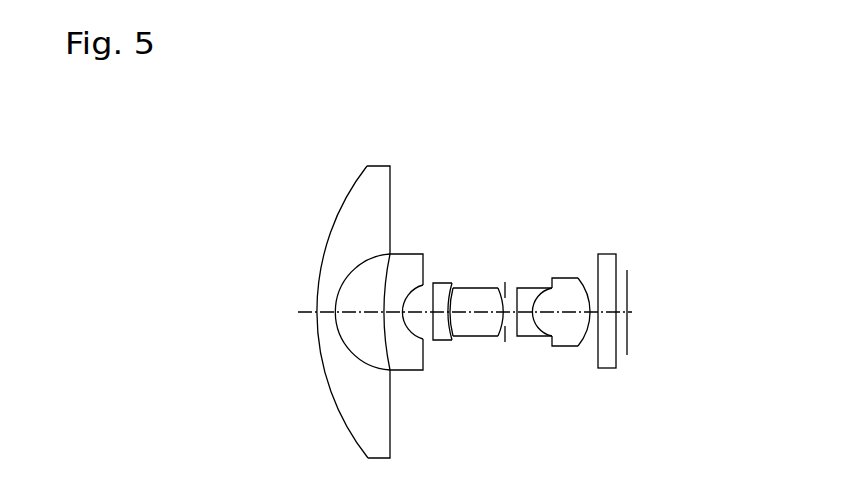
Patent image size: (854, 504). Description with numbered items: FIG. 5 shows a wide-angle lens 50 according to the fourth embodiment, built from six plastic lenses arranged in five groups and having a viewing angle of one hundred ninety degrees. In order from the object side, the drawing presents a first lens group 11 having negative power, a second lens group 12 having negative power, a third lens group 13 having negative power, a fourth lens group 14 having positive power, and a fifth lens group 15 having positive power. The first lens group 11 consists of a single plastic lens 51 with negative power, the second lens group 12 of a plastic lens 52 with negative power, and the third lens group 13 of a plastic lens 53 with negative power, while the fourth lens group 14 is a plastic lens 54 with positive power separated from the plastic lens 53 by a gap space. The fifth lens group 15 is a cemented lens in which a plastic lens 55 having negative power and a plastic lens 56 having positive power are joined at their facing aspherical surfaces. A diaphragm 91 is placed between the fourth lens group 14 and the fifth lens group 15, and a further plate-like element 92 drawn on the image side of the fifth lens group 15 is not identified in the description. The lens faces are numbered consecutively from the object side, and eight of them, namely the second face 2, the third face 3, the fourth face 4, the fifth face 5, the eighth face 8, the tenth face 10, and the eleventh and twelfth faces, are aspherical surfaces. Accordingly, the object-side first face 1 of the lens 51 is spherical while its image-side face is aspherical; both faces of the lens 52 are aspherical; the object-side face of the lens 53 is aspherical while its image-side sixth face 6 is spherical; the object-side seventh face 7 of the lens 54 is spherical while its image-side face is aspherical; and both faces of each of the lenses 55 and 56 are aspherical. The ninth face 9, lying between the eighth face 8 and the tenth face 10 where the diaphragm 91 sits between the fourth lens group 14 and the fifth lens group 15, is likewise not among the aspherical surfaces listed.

The wide-angle lens 50 is at (603, 132).
The first lens group 11 is at (309, 312).
The plastic lens 51 is at (362, 193).
The second lens group 12 is at (362, 301).
The plastic lens 52 is at (413, 253).
The third lens group 13 is at (448, 309).
The plastic lens 53 is at (441, 283).
The fourth lens group 14 is at (496, 336).
The plastic lens 54 is at (471, 288).
The fifth lens group 15 is at (618, 184).
The plastic lens 55 is at (527, 288).
The plastic lens 56 is at (565, 278).
The diaphragm 91 is at (505, 283).
The cover glass 92 is at (608, 255).
The lens surface 1 is at (315, 322).
The second face 2 is at (342, 340).
The third face 3 is at (384, 340).
The fourth face 4 is at (405, 340).
The fifth face 5 is at (433, 328).
The lens surface 6 is at (450, 322).
The lens surface 7 is at (455, 320).
The eighth face 8 is at (497, 320).
The aperture stop surface 9 is at (512, 322).
The tenth face 10 is at (522, 322).